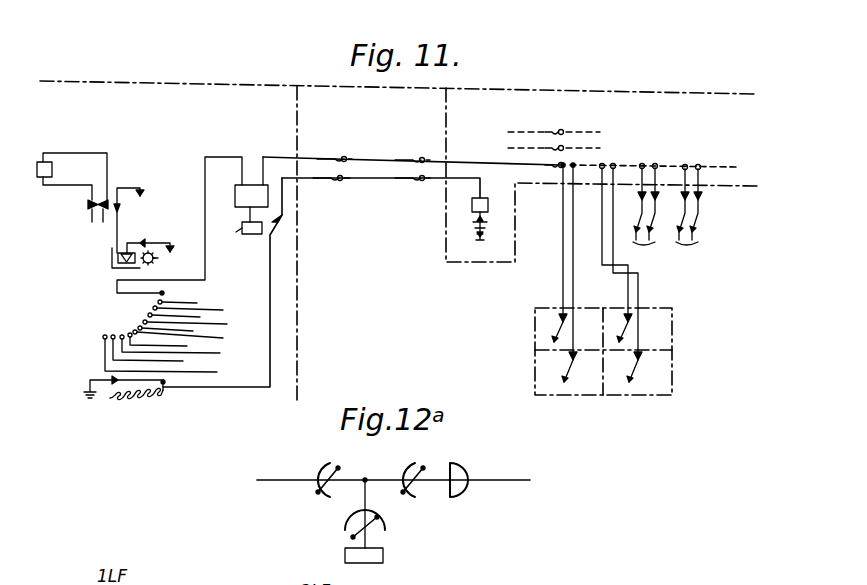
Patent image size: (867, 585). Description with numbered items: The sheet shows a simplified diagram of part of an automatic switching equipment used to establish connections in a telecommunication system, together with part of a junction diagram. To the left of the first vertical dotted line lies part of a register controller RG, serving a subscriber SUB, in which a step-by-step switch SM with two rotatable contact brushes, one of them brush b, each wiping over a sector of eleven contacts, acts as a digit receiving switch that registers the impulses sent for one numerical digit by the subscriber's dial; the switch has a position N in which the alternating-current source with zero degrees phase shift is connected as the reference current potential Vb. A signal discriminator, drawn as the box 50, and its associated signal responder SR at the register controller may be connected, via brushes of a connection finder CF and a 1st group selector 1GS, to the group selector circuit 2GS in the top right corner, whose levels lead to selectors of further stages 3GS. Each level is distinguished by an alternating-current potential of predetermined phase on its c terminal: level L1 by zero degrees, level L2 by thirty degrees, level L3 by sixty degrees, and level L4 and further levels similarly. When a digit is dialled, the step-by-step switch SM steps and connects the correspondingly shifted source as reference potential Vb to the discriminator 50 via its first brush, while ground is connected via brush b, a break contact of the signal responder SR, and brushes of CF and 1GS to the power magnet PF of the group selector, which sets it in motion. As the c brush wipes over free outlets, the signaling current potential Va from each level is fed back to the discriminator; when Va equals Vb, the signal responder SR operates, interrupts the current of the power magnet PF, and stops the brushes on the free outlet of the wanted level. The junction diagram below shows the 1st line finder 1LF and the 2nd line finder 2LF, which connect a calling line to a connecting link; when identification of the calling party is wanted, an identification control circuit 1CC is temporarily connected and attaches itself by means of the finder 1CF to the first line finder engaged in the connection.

In FIG. 11, the register controller RG is at (168, 97).
In FIG. 11, the subscriber SUB is at (72, 187).
In FIG. 11, the step-by-step switch SM is at (123, 229).
In FIG. 11, the rotary selector switch RS is at (172, 344).
In FIG. 11, the position N is at (168, 293).
In FIG. 11, the contact brush b is at (136, 395).
In FIG. 11, the reference current potential Vb is at (179, 214).
In FIG. 11, the signaling current potential Va is at (278, 159).
In FIG. 11, the relay 50 is at (251, 196).
In FIG. 11, the signal responder SR is at (244, 231).
In FIG. 11, the connection finder CF is at (332, 156).
In FIG. 11, the 1st group selector 1GS is at (416, 157).
In FIG. 12A, the 1st group selector 1GS is at (464, 469).
In FIG. 11, the power magnet PF is at (469, 219).
In FIG. 11, the group selector circuit 2GS is at (554, 134).
In FIG. 11, the further stage selectors 3GS is at (687, 173).
In FIG. 11, the level 1 L1 is at (562, 292).
In FIG. 11, the level 2 L2 is at (630, 281).
In FIG. 11, the level 3 L3 is at (650, 214).
In FIG. 11, the level 4 L4 is at (700, 214).
In FIG. 12A, the 1st line finder 1LF is at (331, 468).
In FIG. 12A, the 2nd line finder 2LF is at (409, 468).
In FIG. 12A, the finder 1CF is at (384, 526).
In FIG. 12A, the identification control circuit 1CC is at (364, 556).